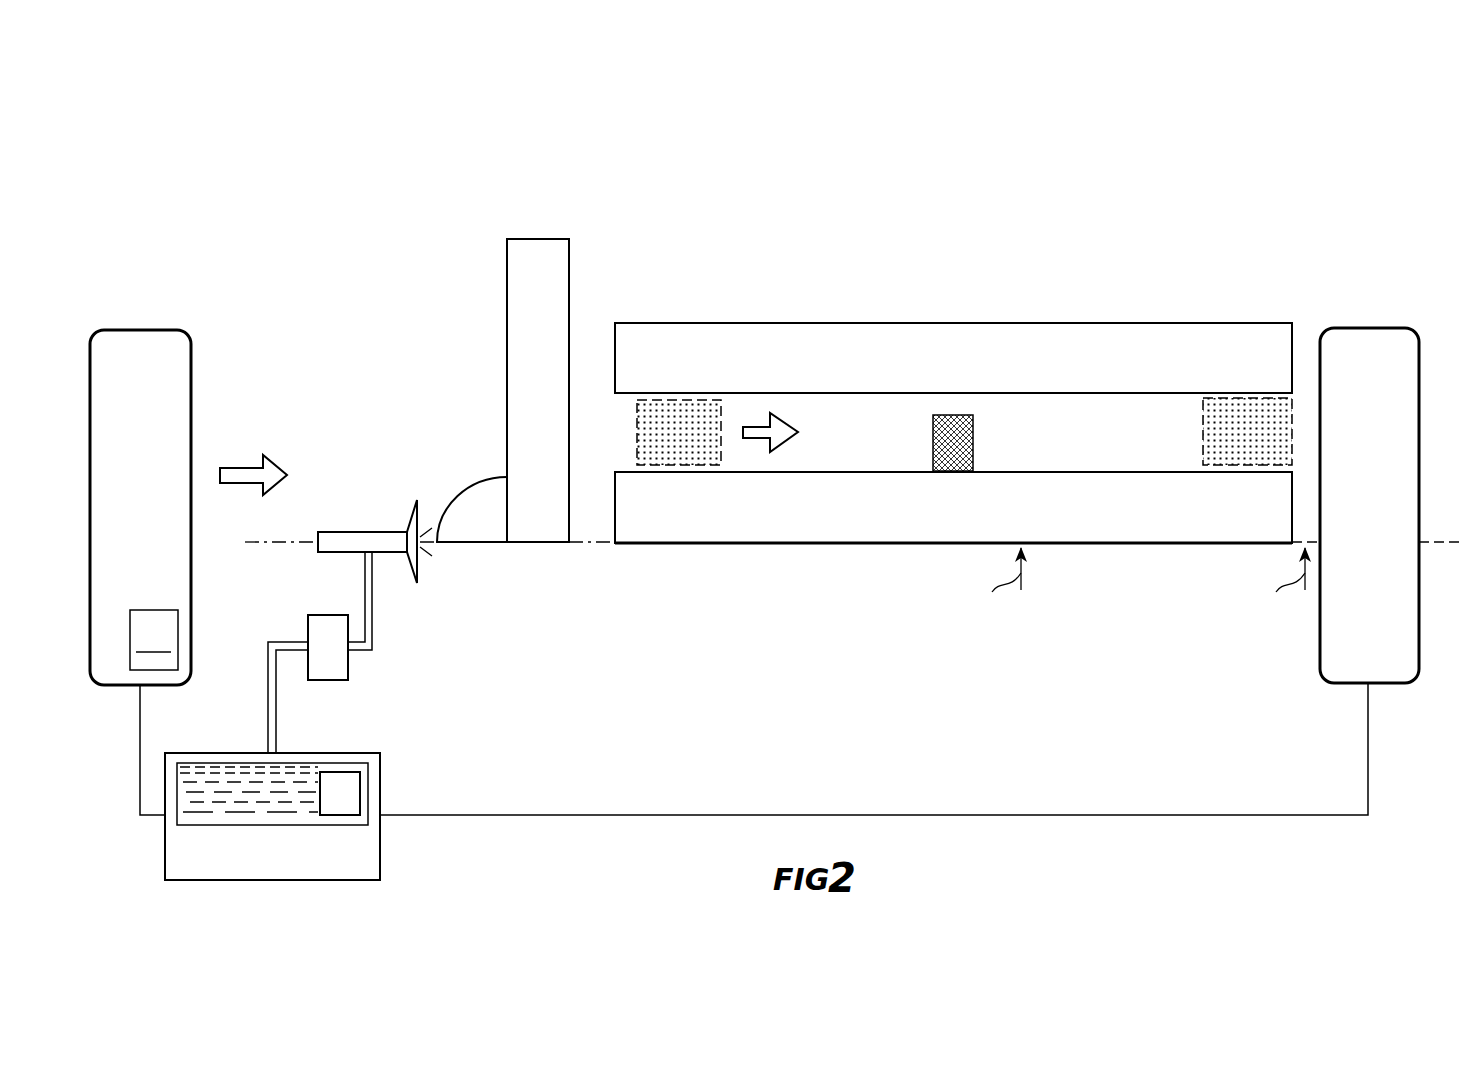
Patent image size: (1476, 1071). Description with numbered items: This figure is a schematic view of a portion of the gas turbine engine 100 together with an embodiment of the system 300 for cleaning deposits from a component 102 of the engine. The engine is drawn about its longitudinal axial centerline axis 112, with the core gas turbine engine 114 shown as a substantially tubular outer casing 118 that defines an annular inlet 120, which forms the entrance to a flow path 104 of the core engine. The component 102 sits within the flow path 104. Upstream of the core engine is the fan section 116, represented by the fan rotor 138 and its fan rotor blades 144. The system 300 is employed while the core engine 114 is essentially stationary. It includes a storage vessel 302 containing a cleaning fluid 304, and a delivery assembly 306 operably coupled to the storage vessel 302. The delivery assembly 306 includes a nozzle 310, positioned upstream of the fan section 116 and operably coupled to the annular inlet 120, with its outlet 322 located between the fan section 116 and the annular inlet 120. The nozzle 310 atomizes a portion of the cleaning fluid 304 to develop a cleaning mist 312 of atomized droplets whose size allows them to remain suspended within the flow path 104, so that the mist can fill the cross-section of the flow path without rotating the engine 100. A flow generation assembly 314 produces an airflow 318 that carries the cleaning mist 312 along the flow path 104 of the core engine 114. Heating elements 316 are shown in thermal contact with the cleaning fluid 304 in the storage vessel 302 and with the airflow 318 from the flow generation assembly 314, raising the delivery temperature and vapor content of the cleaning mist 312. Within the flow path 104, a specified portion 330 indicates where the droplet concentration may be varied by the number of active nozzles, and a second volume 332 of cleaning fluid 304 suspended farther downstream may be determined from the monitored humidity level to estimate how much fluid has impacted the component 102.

The gas turbine engine 100 is at (645, 108).
The component 102 is at (965, 447).
The flow path 104 is at (912, 461).
The axial centerline axis 112 is at (1435, 540).
The core gas turbine engine 114 is at (1247, 178).
The fan section 116 is at (527, 213).
The outer casing 118 is at (942, 328).
The annular inlet 120 is at (612, 405).
The fan rotor 138 is at (543, 545).
The fan rotor blades 144 is at (520, 258).
The system 300 is at (178, 195).
The storage vessel 302 is at (380, 786).
The cleaning fluid 304 is at (302, 770).
The delivery assembly 306 is at (342, 525).
The nozzle 310 is at (418, 518).
The cleaning mist 312 is at (676, 420).
The flow generation assembly 314 is at (140, 330).
The heating element 316 is at (342, 665).
The airflow 318 is at (250, 468).
The outlet 322 is at (407, 556).
The specified portion 330 is at (692, 458).
The second volume 332 is at (1243, 458).